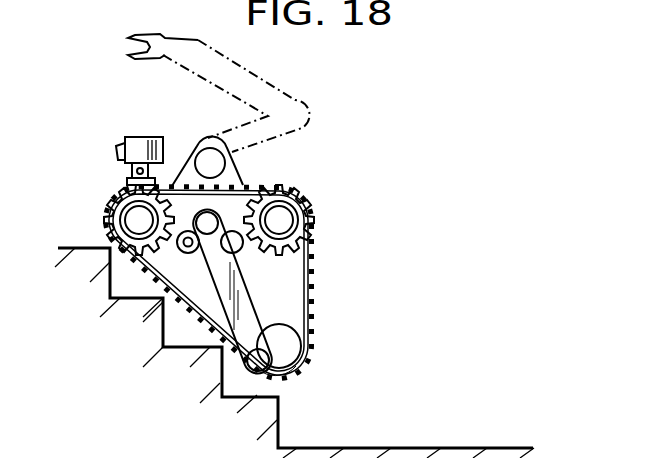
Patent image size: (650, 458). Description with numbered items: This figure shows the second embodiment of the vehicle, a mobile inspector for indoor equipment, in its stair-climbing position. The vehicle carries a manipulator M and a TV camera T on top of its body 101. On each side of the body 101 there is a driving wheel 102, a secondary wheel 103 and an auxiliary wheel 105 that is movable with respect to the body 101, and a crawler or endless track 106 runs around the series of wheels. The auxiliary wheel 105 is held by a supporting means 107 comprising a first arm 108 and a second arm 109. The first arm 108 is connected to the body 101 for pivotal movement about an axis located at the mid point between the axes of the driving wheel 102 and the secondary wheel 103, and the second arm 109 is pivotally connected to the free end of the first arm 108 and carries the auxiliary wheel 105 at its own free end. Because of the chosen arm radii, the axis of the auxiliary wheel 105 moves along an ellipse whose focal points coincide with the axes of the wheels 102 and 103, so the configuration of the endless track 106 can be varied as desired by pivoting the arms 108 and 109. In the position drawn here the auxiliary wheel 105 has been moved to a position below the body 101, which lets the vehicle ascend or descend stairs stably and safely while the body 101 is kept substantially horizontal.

The manipulator M is at (267, 88).
The TV camera T is at (135, 137).
The body 101 is at (243, 186).
The driving wheel 102 is at (110, 214).
The secondary wheel 103 is at (305, 204).
The auxiliary wheel 105 is at (293, 345).
The endless track 106 is at (308, 268).
The supporting means 107 is at (258, 288).
The first arm 108 is at (248, 313).
The second arm 109 is at (298, 371).